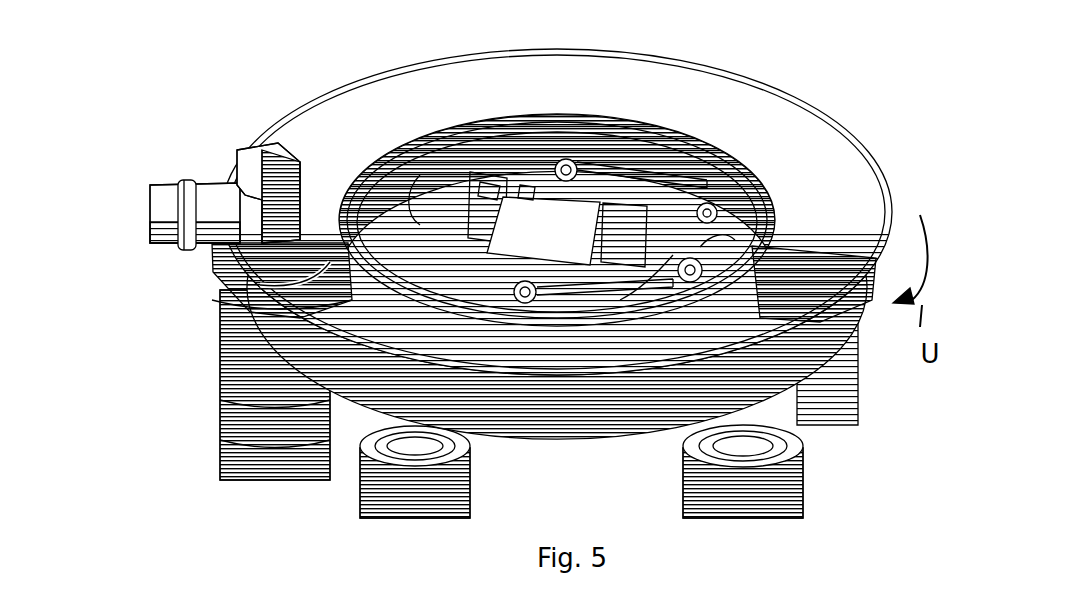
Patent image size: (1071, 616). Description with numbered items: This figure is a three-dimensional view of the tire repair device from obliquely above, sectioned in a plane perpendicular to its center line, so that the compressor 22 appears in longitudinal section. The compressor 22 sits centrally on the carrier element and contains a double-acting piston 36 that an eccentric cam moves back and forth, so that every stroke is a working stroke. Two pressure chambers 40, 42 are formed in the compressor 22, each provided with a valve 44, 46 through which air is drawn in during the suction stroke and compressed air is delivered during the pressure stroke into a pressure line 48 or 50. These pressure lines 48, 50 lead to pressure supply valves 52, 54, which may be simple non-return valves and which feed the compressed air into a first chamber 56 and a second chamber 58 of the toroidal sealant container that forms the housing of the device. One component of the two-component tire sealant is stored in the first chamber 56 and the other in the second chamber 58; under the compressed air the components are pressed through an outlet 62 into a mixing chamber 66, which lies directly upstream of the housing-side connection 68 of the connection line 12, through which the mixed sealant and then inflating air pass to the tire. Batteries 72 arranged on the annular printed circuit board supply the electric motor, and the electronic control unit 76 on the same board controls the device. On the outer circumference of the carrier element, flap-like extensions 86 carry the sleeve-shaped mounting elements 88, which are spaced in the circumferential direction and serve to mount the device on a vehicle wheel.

The connection line 12 is at (163, 210).
The compressor 22 is at (493, 188).
The piston 36 is at (534, 244).
The pressure chamber 40 is at (497, 265).
The pressure chamber 42 is at (530, 190).
The valve 44 is at (515, 272).
The valve 46 is at (553, 183).
The pressure line 48 is at (673, 253).
The pressure line 50 is at (662, 177).
The pressure supply valve 52 is at (703, 262).
The pressure supply valve 54 is at (700, 247).
The first chamber 56 is at (753, 330).
The second chamber 58 is at (810, 213).
The outlet 62 is at (330, 263).
The mixing chamber 66 is at (293, 190).
The housing-side connection 68 is at (222, 200).
The batteries 72 is at (450, 207).
The electronic control unit 76 is at (380, 270).
The flap-like extension 86 is at (420, 470).
The sleeve-shaped mounting element 88 is at (243, 377).